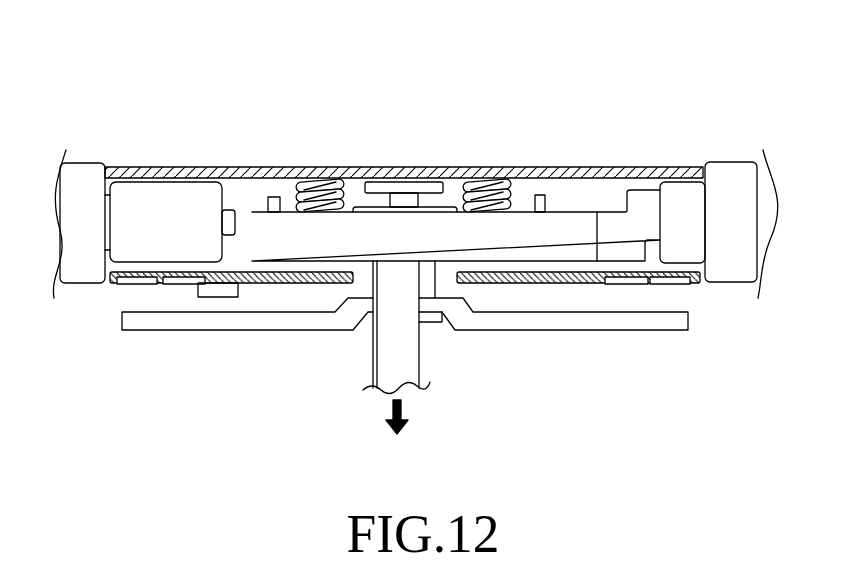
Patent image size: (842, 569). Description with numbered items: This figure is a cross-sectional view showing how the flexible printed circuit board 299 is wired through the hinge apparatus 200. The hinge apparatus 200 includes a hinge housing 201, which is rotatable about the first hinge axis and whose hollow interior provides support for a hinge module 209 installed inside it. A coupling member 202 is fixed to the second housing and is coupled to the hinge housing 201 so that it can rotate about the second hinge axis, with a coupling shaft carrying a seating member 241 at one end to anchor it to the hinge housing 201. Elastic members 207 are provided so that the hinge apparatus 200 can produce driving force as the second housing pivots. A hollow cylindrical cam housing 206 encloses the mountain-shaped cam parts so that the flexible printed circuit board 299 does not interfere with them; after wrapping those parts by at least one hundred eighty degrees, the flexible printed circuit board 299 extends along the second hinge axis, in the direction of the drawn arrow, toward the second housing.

The hinge apparatus 200 is at (63, 67).
The hinge housing 201 is at (608, 176).
The coupling member 202 is at (597, 318).
The cam housing 206 is at (420, 288).
The elastic members 207 is at (298, 188).
The hinge module 209 is at (167, 200).
The seating member 241 is at (405, 187).
The flexible printed circuit board 299 is at (295, 245).